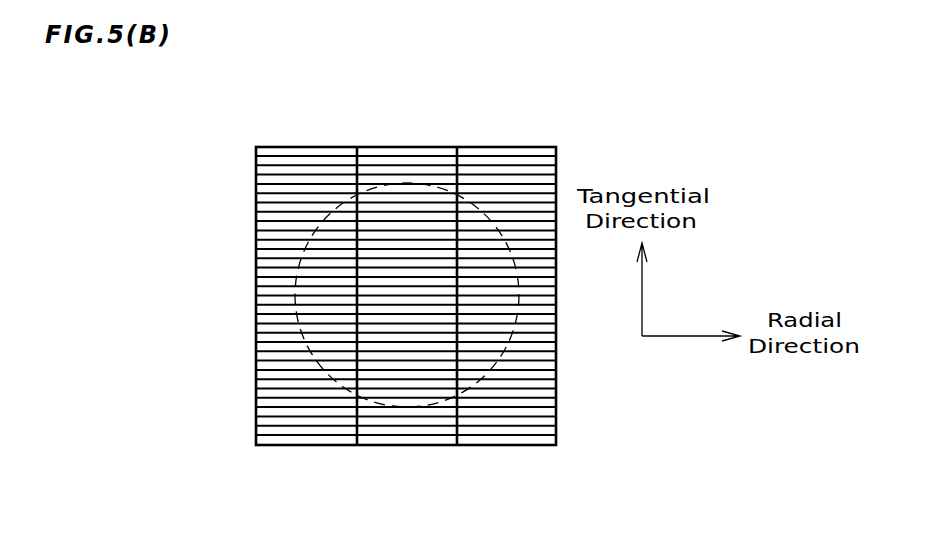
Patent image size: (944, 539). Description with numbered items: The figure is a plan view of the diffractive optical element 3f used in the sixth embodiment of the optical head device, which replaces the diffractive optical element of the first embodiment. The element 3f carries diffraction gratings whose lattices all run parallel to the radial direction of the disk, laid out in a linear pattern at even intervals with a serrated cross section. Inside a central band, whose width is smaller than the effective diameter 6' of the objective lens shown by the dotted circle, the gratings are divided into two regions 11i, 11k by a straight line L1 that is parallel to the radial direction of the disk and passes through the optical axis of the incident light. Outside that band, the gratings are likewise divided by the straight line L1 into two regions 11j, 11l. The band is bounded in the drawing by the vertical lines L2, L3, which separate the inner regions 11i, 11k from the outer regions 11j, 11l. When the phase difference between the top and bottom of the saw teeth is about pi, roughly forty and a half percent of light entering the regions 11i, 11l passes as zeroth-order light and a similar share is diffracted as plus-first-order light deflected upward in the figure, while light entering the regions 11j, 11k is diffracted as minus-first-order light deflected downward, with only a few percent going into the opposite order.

The diffractive optical element 3f is at (256, 385).
The first dividing line L2 is at (358, 162).
The second dividing line L3 is at (458, 162).
The straight line L1 is at (538, 297).
The region 11j is at (314, 169).
The region 11i is at (427, 169).
The region 11k is at (422, 422).
The region 11l is at (310, 422).
The effective diameter of the objective lens 6' is at (338, 295).